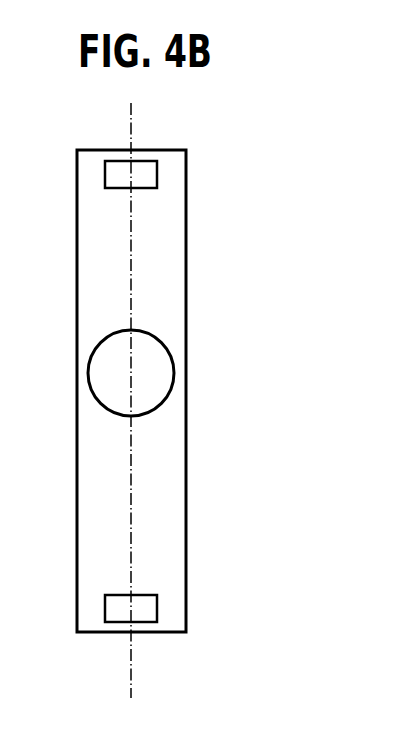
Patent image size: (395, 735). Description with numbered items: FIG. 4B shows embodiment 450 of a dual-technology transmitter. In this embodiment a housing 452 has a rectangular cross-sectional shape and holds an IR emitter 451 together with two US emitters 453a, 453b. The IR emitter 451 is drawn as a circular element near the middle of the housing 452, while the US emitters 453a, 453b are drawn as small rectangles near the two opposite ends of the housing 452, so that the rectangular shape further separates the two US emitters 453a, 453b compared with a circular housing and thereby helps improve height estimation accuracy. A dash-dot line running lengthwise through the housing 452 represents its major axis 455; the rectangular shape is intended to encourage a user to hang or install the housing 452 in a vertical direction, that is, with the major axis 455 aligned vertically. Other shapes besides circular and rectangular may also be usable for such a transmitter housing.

The embodiment 450 is at (260, 64).
The IR emitter 451 is at (140, 390).
The housing 452 is at (186, 280).
The US emitter 453a is at (158, 171).
The US emitter 453b is at (158, 611).
The major axis 455 is at (129, 690).